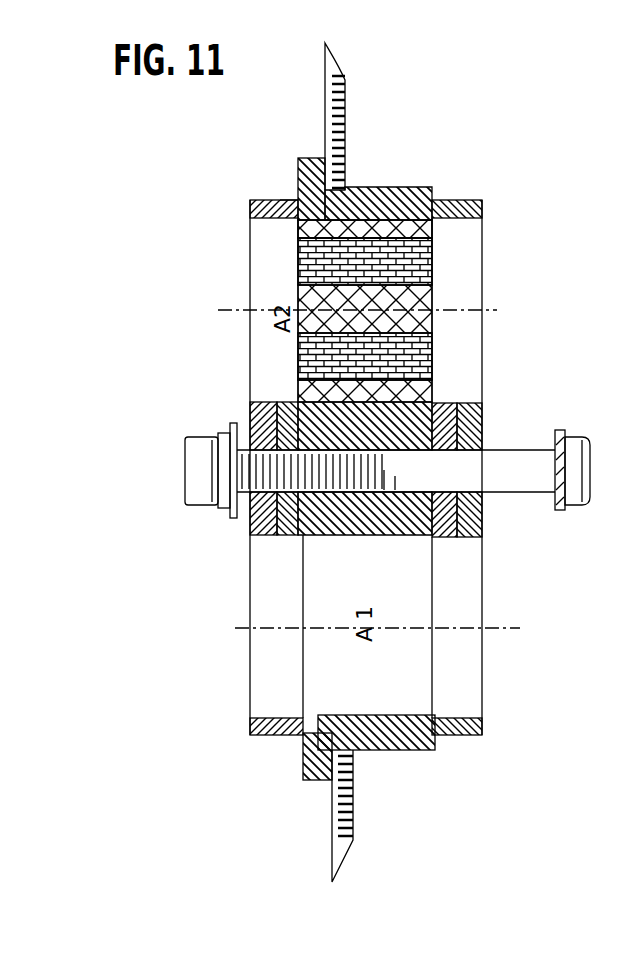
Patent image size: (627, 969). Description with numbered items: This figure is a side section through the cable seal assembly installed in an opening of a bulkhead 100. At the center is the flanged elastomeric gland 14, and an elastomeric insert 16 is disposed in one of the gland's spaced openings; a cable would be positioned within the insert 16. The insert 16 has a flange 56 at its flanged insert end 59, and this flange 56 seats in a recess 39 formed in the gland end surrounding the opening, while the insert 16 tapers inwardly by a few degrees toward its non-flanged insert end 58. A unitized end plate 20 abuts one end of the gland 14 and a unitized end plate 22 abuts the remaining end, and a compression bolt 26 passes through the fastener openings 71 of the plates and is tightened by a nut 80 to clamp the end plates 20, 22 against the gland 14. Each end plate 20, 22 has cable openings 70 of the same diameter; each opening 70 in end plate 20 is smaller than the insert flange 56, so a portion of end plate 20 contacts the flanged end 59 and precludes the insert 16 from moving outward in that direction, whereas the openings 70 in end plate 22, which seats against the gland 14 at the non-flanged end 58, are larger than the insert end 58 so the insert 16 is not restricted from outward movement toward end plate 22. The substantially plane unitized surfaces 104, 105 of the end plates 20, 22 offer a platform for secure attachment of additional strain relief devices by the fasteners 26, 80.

The flanged elastomeric gland 14 is at (362, 187).
The elastomeric insert 16 is at (297, 230).
The end plate 20 is at (247, 203).
The end plate 22 is at (452, 200).
The compression bolt 26 is at (200, 437).
The recess 39 is at (300, 195).
The flange 56 is at (282, 203).
The insert end 58 is at (432, 268).
The insert end 59 is at (297, 252).
The cable opening 70 is at (466, 226).
The fastener opening 71 is at (262, 512).
The nut 80 is at (576, 436).
The bulkhead 100 is at (345, 132).
The unitized surface 104 is at (252, 540).
The unitized surface 105 is at (303, 736).